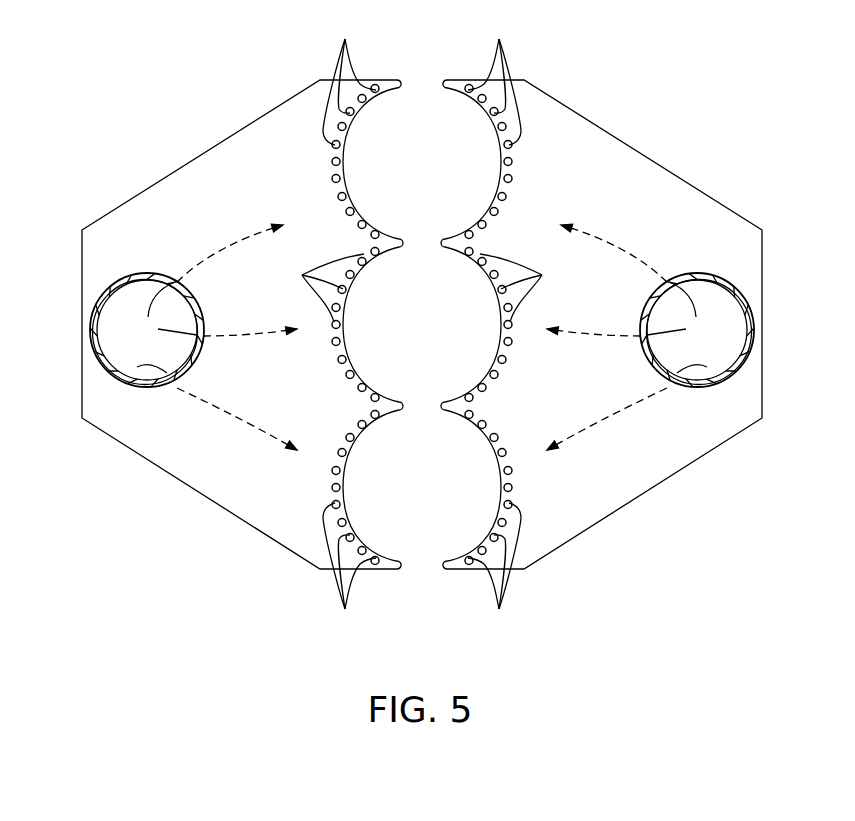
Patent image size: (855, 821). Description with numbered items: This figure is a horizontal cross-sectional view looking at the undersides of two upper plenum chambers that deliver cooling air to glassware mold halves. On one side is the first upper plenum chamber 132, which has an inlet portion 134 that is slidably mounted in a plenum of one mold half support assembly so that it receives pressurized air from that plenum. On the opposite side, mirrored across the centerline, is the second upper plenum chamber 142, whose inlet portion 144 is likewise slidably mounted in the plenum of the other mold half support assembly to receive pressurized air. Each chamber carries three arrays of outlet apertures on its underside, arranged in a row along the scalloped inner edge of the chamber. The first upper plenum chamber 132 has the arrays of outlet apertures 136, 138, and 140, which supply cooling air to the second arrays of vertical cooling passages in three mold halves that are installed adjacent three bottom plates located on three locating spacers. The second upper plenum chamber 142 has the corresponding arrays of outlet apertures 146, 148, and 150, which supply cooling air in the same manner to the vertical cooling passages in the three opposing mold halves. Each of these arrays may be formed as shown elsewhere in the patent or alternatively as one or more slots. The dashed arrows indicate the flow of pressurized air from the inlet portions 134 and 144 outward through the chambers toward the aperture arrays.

The first upper plenum chamber 132 is at (601, 324).
The inlet portion 134 is at (724, 382).
The array of outlet apertures 136 is at (494, 570).
The array of outlet apertures 138 is at (533, 288).
The array of outlet apertures 140 is at (494, 77).
The second upper plenum chamber 142 is at (225, 513).
The inlet portion 144 is at (120, 382).
The array of outlet apertures 146 is at (349, 570).
The array of outlet apertures 148 is at (311, 288).
The array of outlet apertures 150 is at (349, 77).